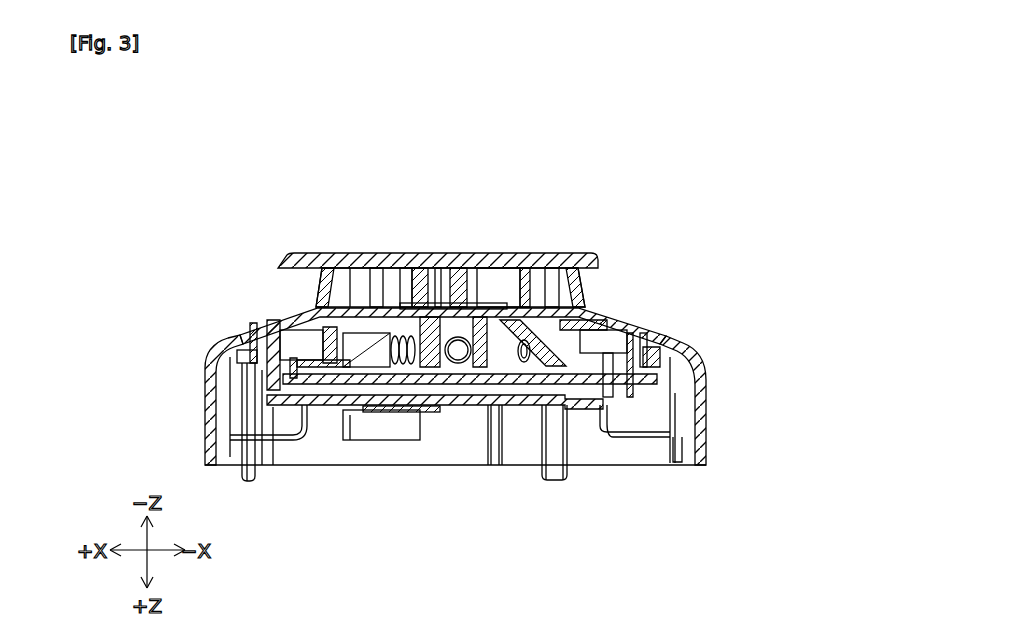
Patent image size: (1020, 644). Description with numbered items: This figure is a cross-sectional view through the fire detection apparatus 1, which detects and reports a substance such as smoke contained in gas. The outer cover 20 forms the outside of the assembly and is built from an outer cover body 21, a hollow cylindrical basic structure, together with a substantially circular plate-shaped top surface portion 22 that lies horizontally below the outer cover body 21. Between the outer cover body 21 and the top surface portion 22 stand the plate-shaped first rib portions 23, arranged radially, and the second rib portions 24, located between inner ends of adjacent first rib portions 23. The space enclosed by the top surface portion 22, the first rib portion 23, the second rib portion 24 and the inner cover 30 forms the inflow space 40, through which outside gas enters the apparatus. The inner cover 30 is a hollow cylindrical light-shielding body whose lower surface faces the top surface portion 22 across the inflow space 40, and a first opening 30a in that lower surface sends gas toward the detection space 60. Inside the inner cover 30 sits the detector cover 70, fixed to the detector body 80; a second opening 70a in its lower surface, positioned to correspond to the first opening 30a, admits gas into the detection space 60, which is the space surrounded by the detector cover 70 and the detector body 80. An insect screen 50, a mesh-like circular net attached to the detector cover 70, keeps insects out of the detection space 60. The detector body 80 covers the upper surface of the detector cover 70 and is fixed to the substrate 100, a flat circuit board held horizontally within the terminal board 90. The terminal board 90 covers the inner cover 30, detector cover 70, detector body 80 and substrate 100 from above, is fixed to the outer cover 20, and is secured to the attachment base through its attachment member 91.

The fire detection apparatus 1 is at (712, 128).
The outer cover 20 is at (702, 426).
The outer cover body 21 is at (452, 410).
The top surface portion 22 is at (478, 266).
The first rib portion 23 is at (322, 279).
The second rib portion 24 is at (445, 300).
The inner cover 30 is at (250, 355).
The first opening 30a is at (503, 298).
The inflow space 40 is at (313, 292).
The insect screen 50 is at (380, 302).
The detection space 60 is at (427, 330).
The detector cover 70 is at (643, 354).
The second opening 70a is at (607, 331).
The detector body 80 is at (503, 405).
The terminal board 90 is at (455, 441).
The attachment member 91 is at (282, 445).
The substrate 100 is at (530, 405).